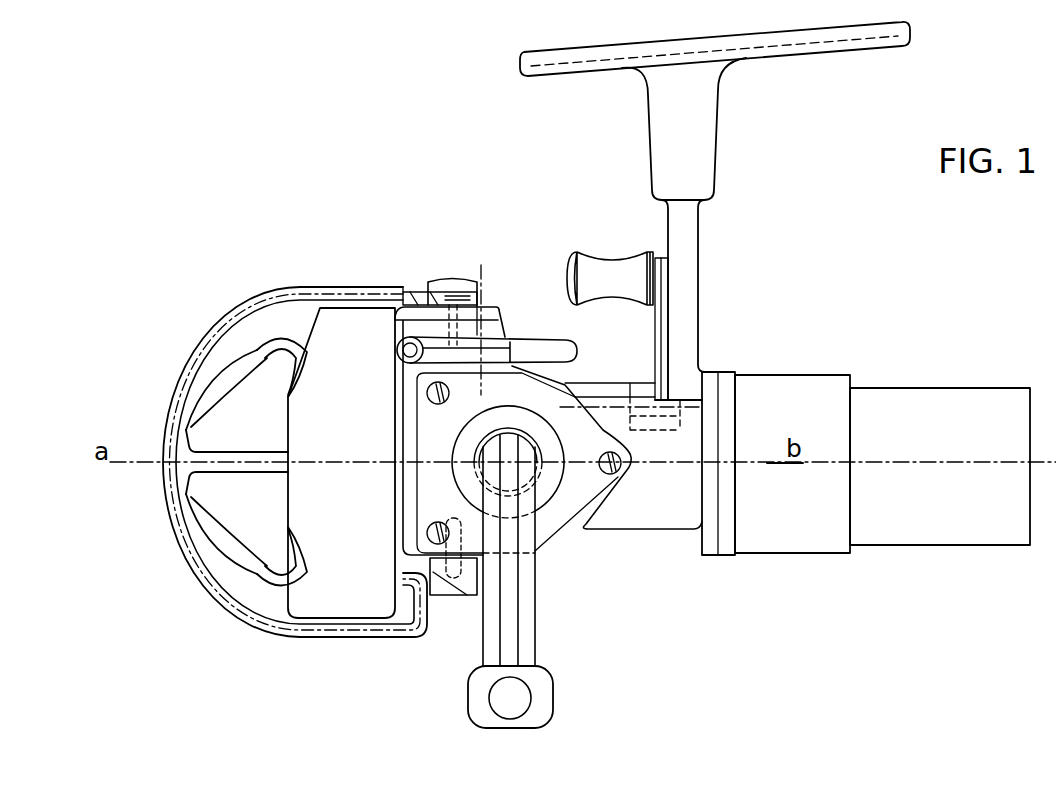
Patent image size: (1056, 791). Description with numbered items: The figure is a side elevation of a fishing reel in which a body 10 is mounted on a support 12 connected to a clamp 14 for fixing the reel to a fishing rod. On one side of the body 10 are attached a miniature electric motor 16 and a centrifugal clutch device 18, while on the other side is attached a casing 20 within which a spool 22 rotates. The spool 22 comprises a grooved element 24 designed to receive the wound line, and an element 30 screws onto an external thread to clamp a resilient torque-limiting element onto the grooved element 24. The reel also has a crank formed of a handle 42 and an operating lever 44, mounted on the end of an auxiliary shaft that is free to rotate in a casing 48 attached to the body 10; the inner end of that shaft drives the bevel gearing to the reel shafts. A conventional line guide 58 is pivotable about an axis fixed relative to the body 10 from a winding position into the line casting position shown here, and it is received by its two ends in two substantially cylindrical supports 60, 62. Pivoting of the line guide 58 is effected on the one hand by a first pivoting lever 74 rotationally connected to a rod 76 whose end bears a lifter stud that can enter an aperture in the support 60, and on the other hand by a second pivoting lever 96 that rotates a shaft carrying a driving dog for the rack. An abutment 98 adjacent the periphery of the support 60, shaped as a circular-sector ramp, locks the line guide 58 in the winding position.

The body 10 is at (660, 520).
The support 12 is at (700, 246).
The clamp 14 is at (907, 36).
The miniature electric motor 16 is at (928, 405).
The centrifugal clutch device 18 is at (808, 392).
The casing 20 is at (358, 453).
The spool 22 is at (218, 362).
The grooved element 24 is at (285, 342).
The element 30 is at (250, 439).
The handle 42 is at (542, 704).
The operating lever 44 is at (525, 625).
The casing 48 is at (590, 504).
The line guide 58 is at (218, 600).
The cylindrical support 60 is at (468, 278).
The cylindrical support 62 is at (467, 590).
The first pivoting lever 74 is at (568, 342).
The rod 76 is at (398, 352).
The second pivoting lever 96 is at (660, 335).
The abutment 98 is at (412, 292).